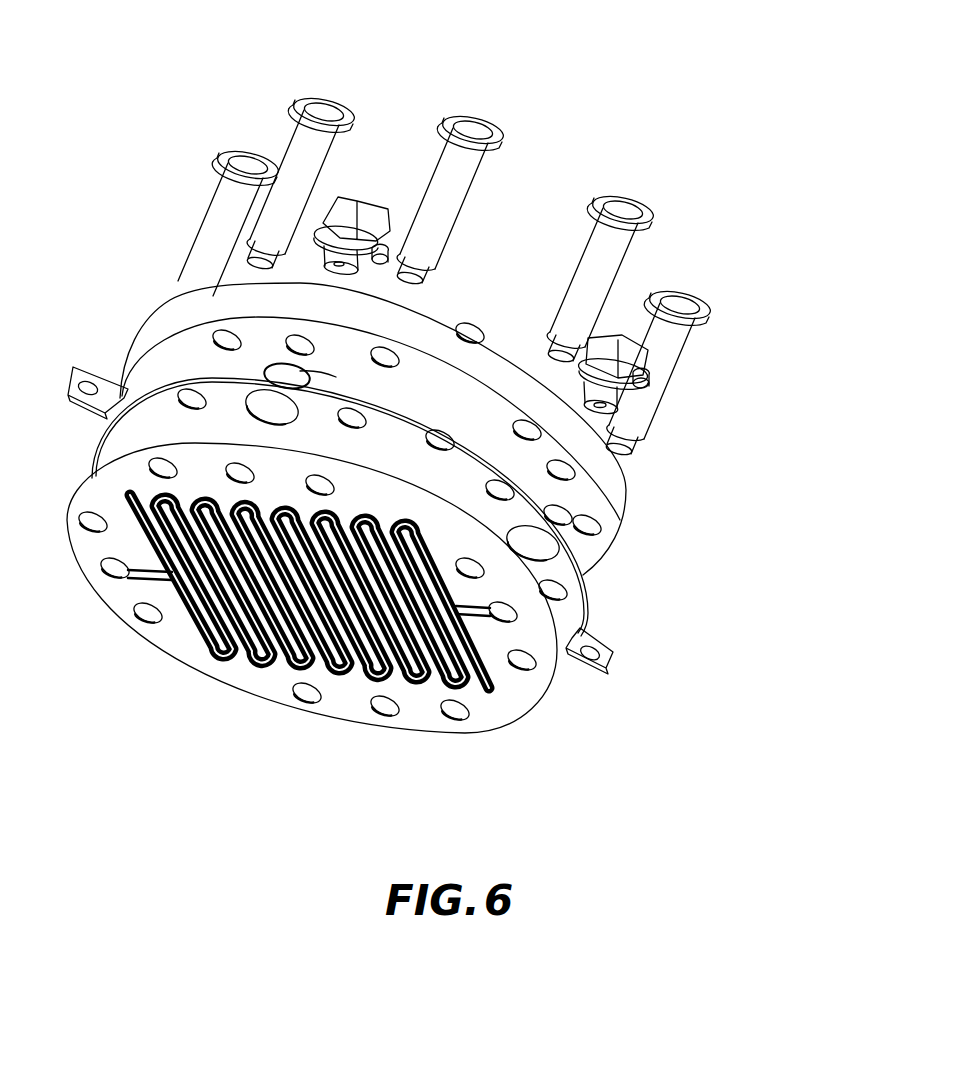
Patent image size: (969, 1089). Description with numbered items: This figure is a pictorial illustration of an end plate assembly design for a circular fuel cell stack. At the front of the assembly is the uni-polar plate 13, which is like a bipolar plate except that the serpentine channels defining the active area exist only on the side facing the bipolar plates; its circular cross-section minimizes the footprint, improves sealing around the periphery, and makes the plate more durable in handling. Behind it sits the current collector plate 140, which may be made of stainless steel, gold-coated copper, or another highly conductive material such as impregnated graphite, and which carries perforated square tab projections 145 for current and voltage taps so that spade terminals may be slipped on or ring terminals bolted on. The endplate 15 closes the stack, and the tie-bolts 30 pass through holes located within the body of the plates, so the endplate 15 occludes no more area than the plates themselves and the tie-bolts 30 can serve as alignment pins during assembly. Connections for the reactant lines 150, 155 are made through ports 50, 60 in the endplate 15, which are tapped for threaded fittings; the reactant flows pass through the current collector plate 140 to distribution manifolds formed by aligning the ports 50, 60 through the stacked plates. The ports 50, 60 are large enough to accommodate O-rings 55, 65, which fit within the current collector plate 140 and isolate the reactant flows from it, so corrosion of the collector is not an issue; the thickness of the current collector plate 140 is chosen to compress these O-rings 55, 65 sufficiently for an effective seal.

The uni-polar plate 13 is at (190, 650).
The endplate 15 is at (626, 488).
The tie-bolt 30 is at (328, 100).
The port 50 is at (553, 508).
The O-ring 55 is at (572, 527).
The port 60 is at (265, 366).
The O-ring 65 is at (317, 374).
The current collector plate 140 is at (447, 480).
The perforated square tab projection 145 is at (72, 373).
The reactant line 150 is at (365, 198).
The reactant line 155 is at (637, 327).